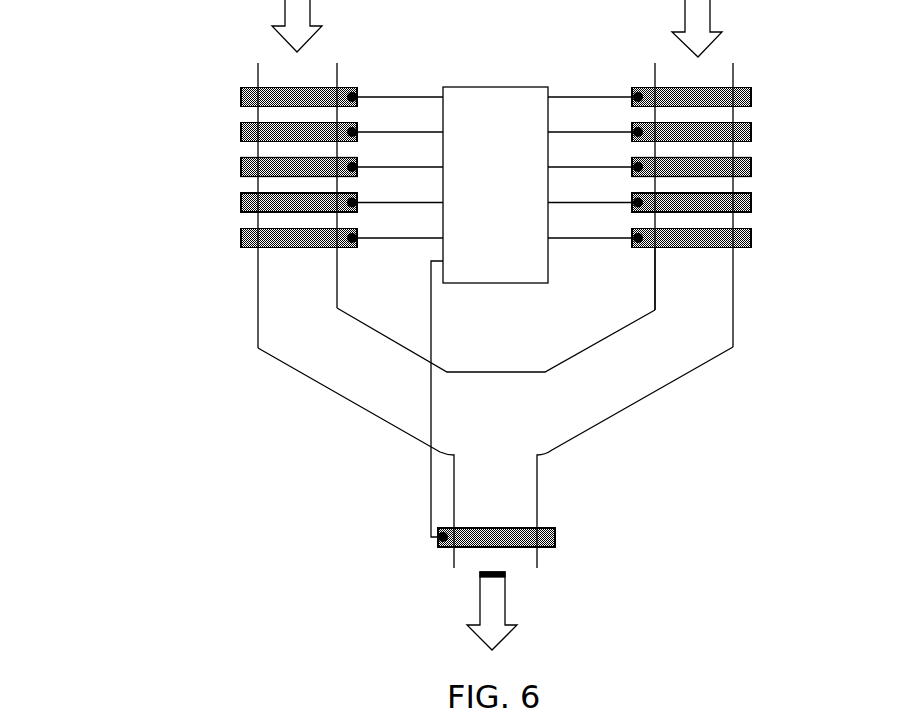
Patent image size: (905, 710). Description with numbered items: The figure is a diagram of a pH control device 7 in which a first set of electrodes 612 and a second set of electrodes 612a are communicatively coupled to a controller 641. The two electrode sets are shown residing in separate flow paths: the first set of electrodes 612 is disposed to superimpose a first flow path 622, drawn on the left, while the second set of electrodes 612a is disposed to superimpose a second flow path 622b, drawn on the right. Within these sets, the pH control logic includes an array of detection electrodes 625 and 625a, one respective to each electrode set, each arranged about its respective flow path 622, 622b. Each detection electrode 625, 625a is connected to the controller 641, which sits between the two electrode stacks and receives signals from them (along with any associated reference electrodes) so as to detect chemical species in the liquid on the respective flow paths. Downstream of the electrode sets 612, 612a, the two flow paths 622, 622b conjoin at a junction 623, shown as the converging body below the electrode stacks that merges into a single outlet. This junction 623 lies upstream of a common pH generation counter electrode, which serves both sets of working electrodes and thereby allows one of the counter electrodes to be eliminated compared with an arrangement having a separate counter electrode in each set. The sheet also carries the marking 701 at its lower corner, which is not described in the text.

The pH control device 7 is at (114, 140).
The first set of electrodes 612 is at (225, 90).
The second set of electrodes 612a is at (760, 90).
The detection electrode 625 is at (247, 177).
The detection electrode 625a is at (740, 172).
The controller 641 is at (492, 87).
The first flow path 622 is at (327, 265).
The second flow path 622b is at (660, 272).
The junction 623 is at (535, 410).
The sheet reference 701 is at (857, 696).